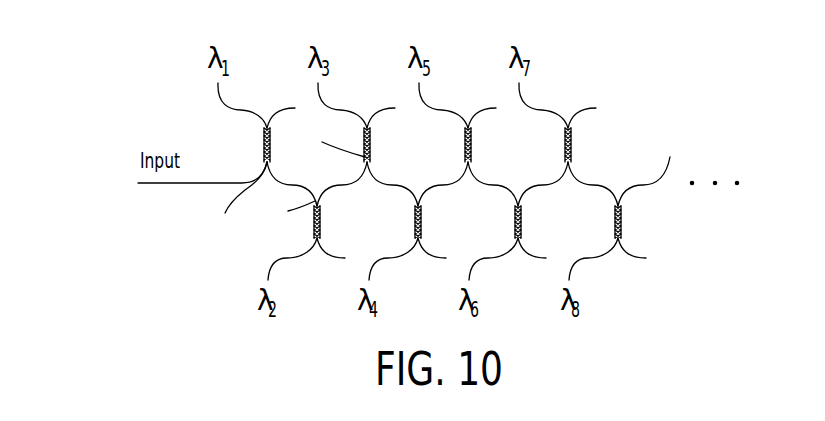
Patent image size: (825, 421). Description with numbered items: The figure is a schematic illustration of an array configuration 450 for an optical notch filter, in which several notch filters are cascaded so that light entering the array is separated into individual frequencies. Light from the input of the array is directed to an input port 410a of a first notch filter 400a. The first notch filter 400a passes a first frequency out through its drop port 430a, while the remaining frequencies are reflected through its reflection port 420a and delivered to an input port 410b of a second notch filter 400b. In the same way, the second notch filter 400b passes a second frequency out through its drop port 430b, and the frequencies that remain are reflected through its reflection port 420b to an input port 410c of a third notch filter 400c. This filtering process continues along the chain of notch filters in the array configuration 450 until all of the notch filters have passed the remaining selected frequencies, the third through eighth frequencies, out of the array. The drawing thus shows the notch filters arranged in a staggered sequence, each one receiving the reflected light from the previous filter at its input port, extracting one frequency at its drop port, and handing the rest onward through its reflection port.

The first notch filter 400a is at (263, 148).
The second notch filter 400b is at (322, 220).
The third notch filter 400c is at (373, 150).
The input port 410a is at (235, 207).
The input port 410b is at (281, 212).
The input port 410c is at (334, 132).
The reflection port 420a is at (273, 175).
The reflection port 420b is at (327, 187).
The drop port 430a is at (217, 92).
The drop port 430b is at (277, 263).
The array configuration 450 is at (645, 104).